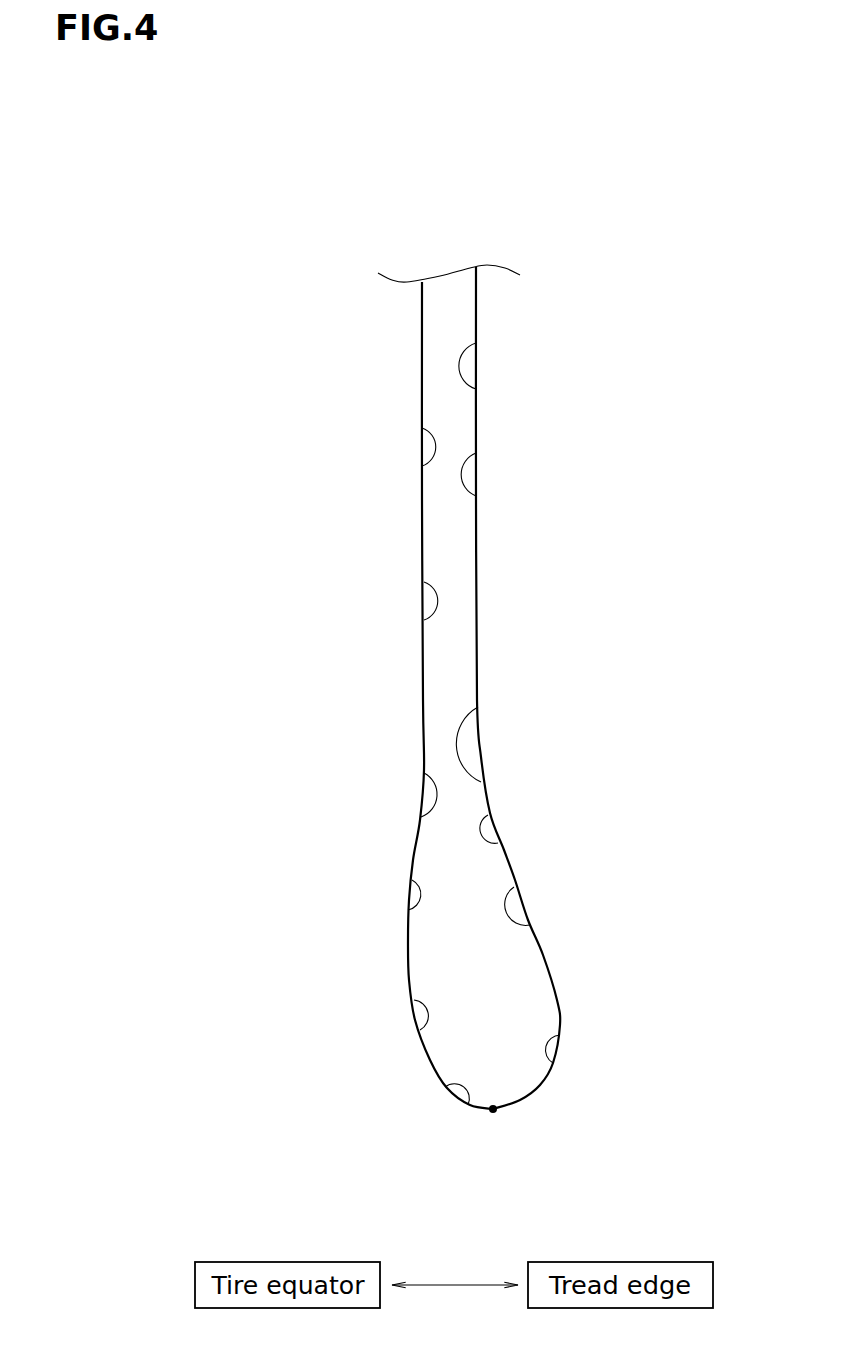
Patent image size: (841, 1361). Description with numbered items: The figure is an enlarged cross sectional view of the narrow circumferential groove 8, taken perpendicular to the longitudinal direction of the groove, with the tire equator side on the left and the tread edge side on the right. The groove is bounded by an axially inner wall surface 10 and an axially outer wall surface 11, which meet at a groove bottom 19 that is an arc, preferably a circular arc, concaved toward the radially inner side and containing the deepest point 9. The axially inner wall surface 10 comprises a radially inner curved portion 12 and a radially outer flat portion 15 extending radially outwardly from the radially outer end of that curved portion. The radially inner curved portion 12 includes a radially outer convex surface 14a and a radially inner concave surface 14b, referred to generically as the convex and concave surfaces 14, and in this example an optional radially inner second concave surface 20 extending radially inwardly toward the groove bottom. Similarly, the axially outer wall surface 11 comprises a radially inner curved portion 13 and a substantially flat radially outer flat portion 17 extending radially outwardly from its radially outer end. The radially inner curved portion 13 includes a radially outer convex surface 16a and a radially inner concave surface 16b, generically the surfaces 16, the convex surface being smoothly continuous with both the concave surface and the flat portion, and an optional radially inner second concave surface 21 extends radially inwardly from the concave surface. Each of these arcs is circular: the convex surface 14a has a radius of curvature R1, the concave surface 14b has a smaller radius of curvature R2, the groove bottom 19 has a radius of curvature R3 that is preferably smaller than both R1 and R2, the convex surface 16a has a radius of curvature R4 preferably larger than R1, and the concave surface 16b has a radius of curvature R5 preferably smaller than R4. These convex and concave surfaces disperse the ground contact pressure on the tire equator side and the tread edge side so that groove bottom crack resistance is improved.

The narrow circumferential groove 8 is at (447, 323).
The deepest point 9 is at (492, 1113).
The axially inner wall surface 10 is at (422, 466).
The axially outer wall surface 11 is at (476, 389).
The radially inner curved portion 12 is at (468, 1105).
The radially inner curved portion 13 is at (553, 1063).
The convex surface and concave surface 14 is at (408, 910).
The radially outer convex surface 14a is at (424, 773).
The radially inner concave surface 14b is at (420, 1030).
The radially outer flat portion 15 is at (424, 620).
The convex surface and concave surface 16 is at (488, 815).
The radially outer convex surface 16a is at (478, 707).
The radially inner concave surface 16b is at (514, 887).
The radially outer flat portion 17 is at (476, 496).
The groove bottom 19 is at (528, 1102).
The radially inner second concave surface 20 is at (432, 1067).
The radially inner second concave surface 21 is at (558, 1000).
The radius of curvature R1 is at (417, 847).
The radius of curvature R2 is at (462, 953).
The radius of curvature R3 is at (498, 1057).
The radius of curvature R4 is at (481, 757).
The radius of curvature R5 is at (488, 973).